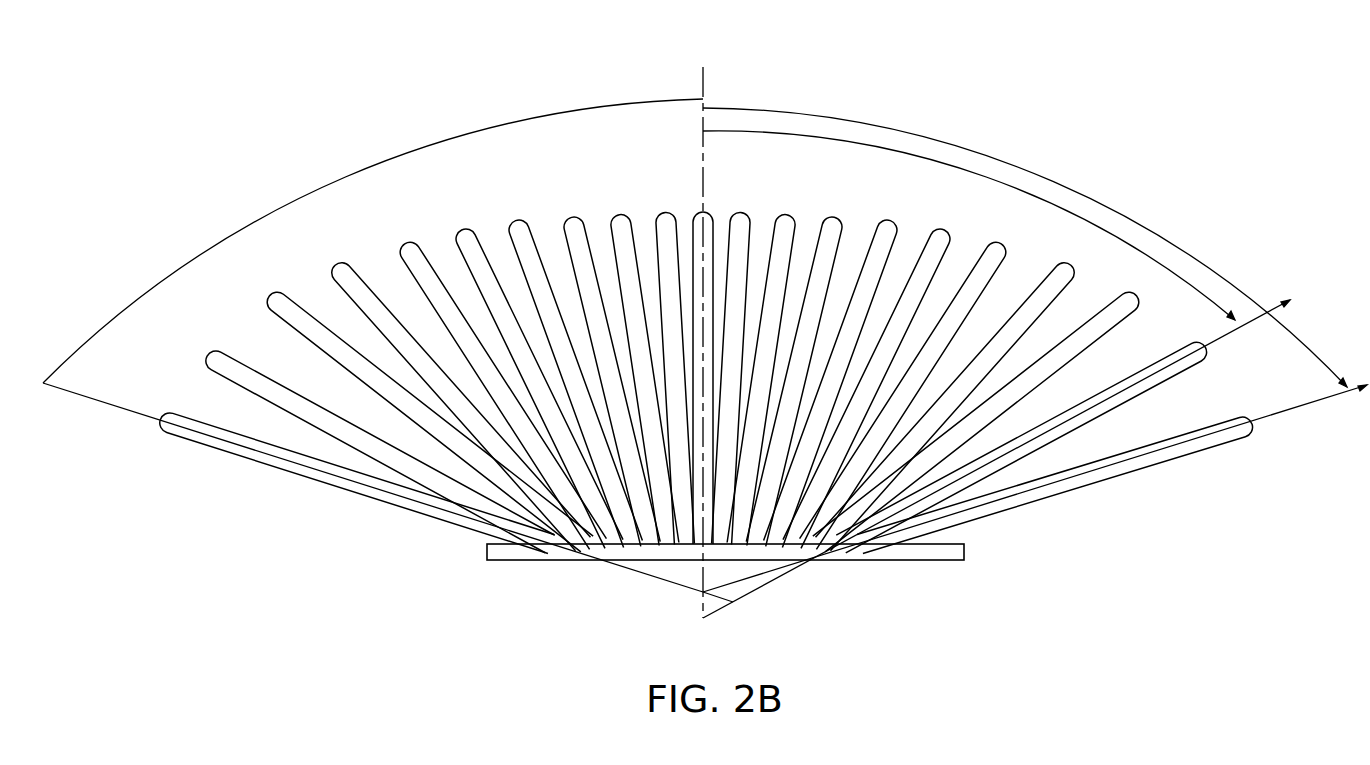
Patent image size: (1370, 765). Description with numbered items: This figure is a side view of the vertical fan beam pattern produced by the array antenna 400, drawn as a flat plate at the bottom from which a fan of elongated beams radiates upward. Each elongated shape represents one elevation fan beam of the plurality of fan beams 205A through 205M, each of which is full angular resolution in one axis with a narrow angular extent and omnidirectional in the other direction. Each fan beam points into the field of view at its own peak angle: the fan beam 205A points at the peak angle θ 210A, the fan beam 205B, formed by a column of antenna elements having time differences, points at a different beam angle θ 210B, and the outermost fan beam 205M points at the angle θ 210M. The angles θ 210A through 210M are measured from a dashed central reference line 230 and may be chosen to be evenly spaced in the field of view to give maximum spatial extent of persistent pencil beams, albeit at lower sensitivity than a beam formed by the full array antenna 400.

The central axis 230 is at (705, 73).
The peak angle 210M is at (188, 262).
The peak angle 210A is at (982, 153).
The beam angle 210B is at (875, 155).
The elevation fan beam 205M is at (320, 482).
The elevation fan beam 205A is at (1187, 448).
The elevation fan beam 205B is at (1153, 380).
The antenna 400 is at (549, 562).